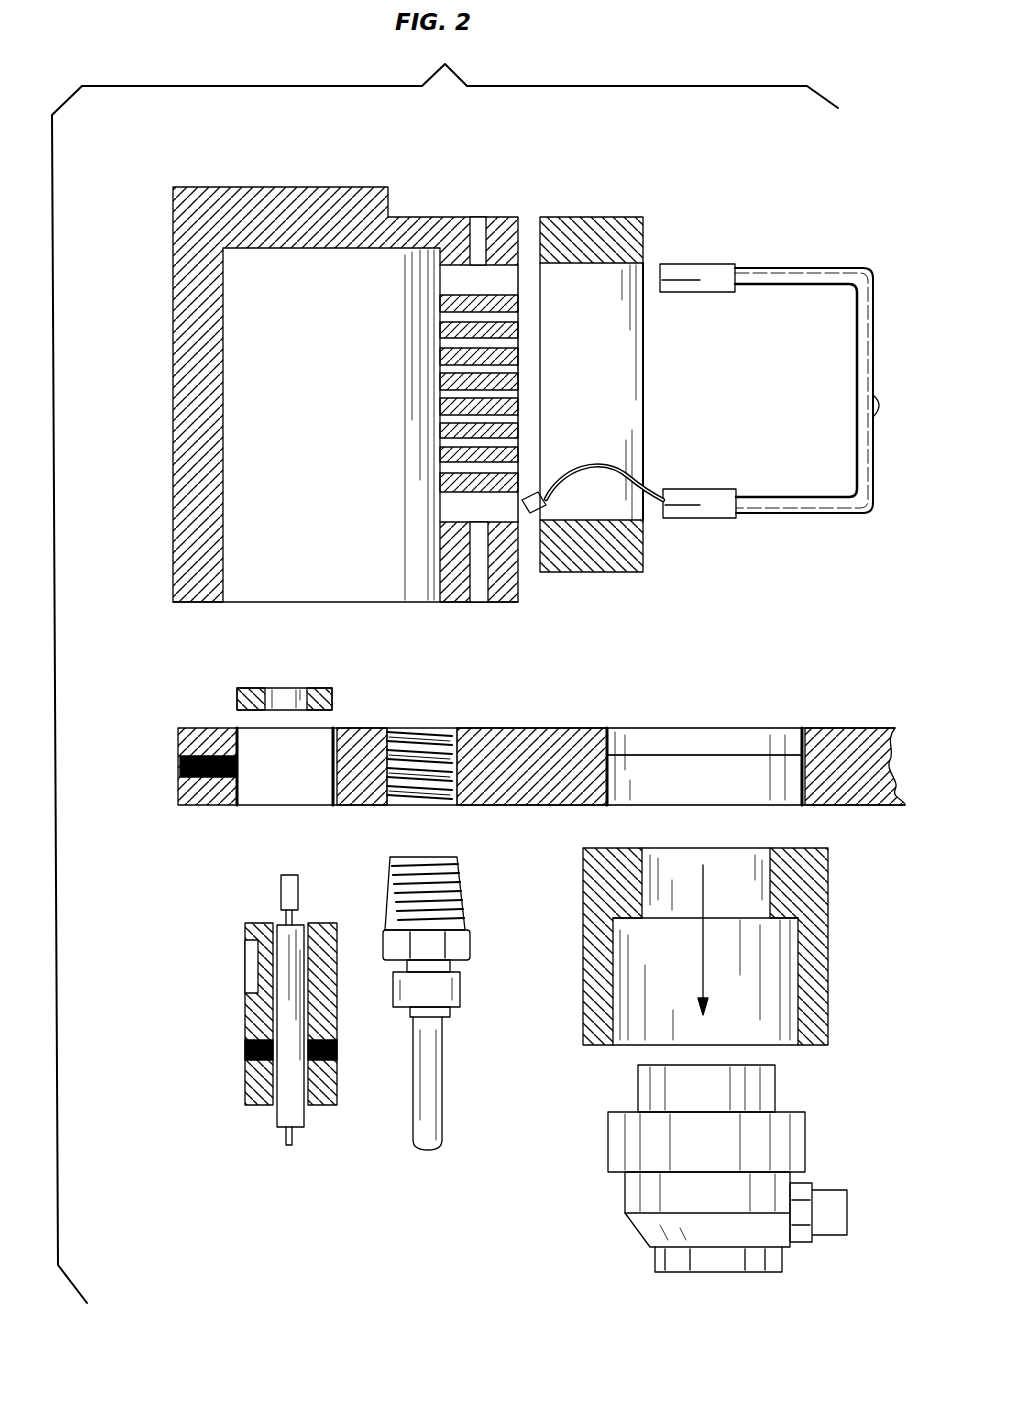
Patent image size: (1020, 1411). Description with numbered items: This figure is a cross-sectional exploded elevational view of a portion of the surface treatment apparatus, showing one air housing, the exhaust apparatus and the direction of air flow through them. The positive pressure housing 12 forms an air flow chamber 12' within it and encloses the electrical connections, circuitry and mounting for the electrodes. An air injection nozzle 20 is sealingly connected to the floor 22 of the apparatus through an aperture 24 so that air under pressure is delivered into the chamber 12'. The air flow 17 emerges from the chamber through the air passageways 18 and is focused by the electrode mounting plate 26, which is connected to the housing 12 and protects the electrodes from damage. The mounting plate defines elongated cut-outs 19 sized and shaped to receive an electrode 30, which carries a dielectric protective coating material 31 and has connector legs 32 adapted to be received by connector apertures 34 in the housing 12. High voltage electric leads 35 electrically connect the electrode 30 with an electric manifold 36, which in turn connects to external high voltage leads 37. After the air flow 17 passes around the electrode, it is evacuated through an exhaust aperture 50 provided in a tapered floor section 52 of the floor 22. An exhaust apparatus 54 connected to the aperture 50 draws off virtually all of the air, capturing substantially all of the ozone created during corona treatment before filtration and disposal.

The positive pressure housing 12 is at (341, 376).
The air flow chamber 12' is at (337, 425).
The air flow 17 is at (425, 467).
The air passageways 18 is at (438, 378).
The elongated cut-outs 19 is at (643, 268).
The air injection nozzle 20 is at (442, 1085).
The floor 22 is at (207, 808).
The aperture 24 is at (428, 730).
The electrode mounting plate 26 is at (598, 240).
The electrode 30 is at (865, 352).
The dielectric protective coating material 31 is at (872, 417).
The connector legs 32 is at (712, 268).
The connector apertures 34 is at (518, 270).
The high voltage electric leads 35 is at (645, 490).
The electric manifold 36 is at (237, 690).
The external high voltage leads 37 is at (285, 1125).
The exhaust aperture 50 is at (732, 786).
The tapered floor section 52 is at (732, 754).
The exhaust apparatus 54 is at (625, 1258).